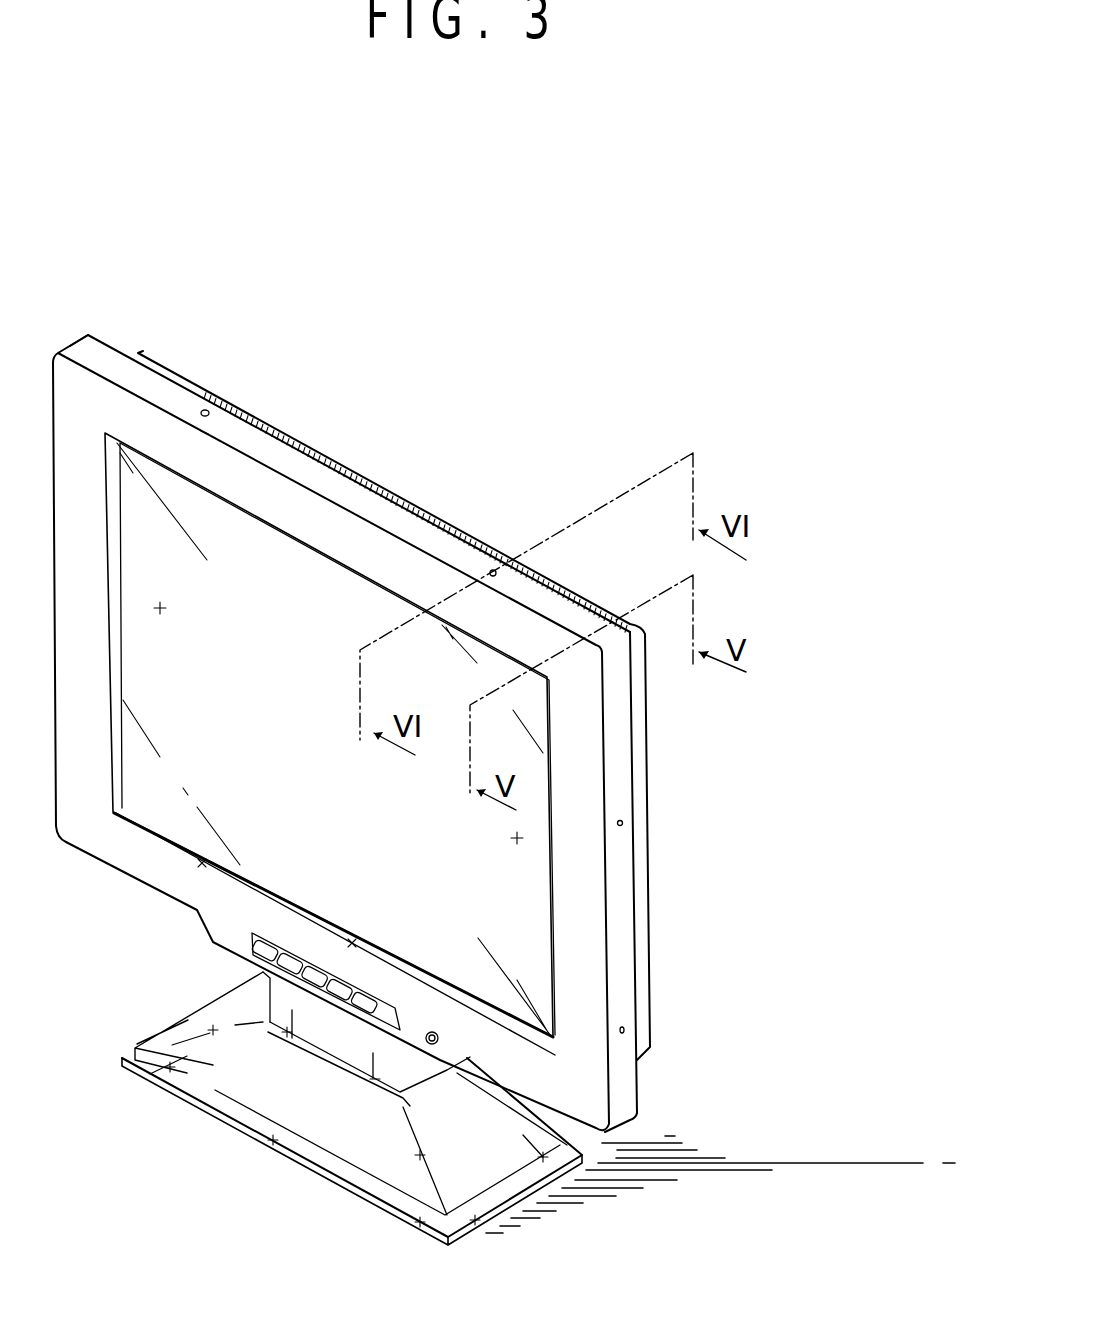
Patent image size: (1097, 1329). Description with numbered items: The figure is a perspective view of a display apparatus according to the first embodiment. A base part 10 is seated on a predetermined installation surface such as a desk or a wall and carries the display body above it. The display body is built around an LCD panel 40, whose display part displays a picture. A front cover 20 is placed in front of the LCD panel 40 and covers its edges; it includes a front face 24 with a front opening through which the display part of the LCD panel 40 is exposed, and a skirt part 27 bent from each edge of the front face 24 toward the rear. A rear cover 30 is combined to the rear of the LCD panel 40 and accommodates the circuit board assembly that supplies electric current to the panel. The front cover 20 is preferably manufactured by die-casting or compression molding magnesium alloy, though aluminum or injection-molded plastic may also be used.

The base part 10 is at (279, 1159).
The front cover 20 is at (431, 732).
The front face 24 is at (578, 893).
The skirt part 27 is at (620, 950).
The rear cover 30 is at (650, 784).
The LCD panel 40 is at (535, 836).